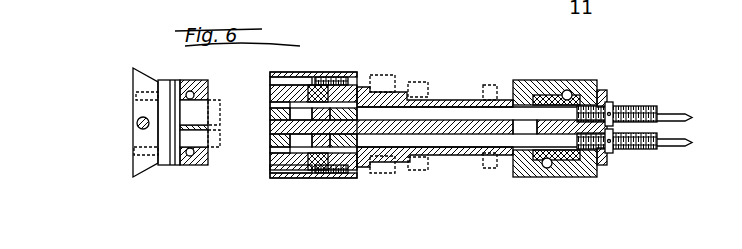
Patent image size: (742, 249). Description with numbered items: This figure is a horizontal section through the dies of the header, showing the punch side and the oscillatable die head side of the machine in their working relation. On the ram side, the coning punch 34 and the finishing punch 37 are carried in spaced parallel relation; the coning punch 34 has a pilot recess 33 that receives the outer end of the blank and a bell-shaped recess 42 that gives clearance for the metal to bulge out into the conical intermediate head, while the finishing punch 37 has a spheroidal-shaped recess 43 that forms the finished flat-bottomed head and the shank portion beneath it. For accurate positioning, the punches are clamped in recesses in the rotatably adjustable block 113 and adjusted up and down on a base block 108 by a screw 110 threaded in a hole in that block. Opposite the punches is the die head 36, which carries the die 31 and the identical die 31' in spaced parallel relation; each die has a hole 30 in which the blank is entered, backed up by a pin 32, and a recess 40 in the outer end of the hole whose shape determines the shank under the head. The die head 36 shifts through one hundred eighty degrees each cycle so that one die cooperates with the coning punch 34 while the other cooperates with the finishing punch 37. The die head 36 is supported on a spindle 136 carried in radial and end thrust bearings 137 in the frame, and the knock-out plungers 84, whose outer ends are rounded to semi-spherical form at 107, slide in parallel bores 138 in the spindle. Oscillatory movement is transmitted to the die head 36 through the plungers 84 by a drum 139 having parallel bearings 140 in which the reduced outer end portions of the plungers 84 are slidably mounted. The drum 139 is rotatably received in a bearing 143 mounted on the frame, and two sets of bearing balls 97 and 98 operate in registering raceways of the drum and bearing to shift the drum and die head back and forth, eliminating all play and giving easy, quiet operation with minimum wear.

The base block 108 is at (134, 70).
The screw 110 is at (137, 127).
The rotatably adjustable block 113 is at (183, 167).
The finishing punch 37 is at (211, 147).
The bell-shaped recess 42 is at (215, 112).
The spheroidal-shaped recess 43 is at (215, 141).
The pilot recess 33 is at (212, 97).
The coning punch 34 is at (221, 98).
The hole 30 is at (293, 150).
The die 31 is at (294, 80).
The die 31' is at (287, 179).
The pin 32 is at (322, 150).
The die head 36 is at (324, 75).
The recess 40 is at (278, 136).
The spindle 136 is at (440, 122).
The parallel bores 138 is at (418, 148).
The radial and end thrust bearings 137 is at (483, 88).
The bearing 143 is at (491, 110).
The parallel bearings 140 is at (548, 96).
The balls 97 is at (567, 91).
The balls 98 is at (547, 167).
The drum 139 is at (599, 104).
The semi-spherical rounded ends 107 is at (688, 142).
The plungers 84 is at (667, 149).